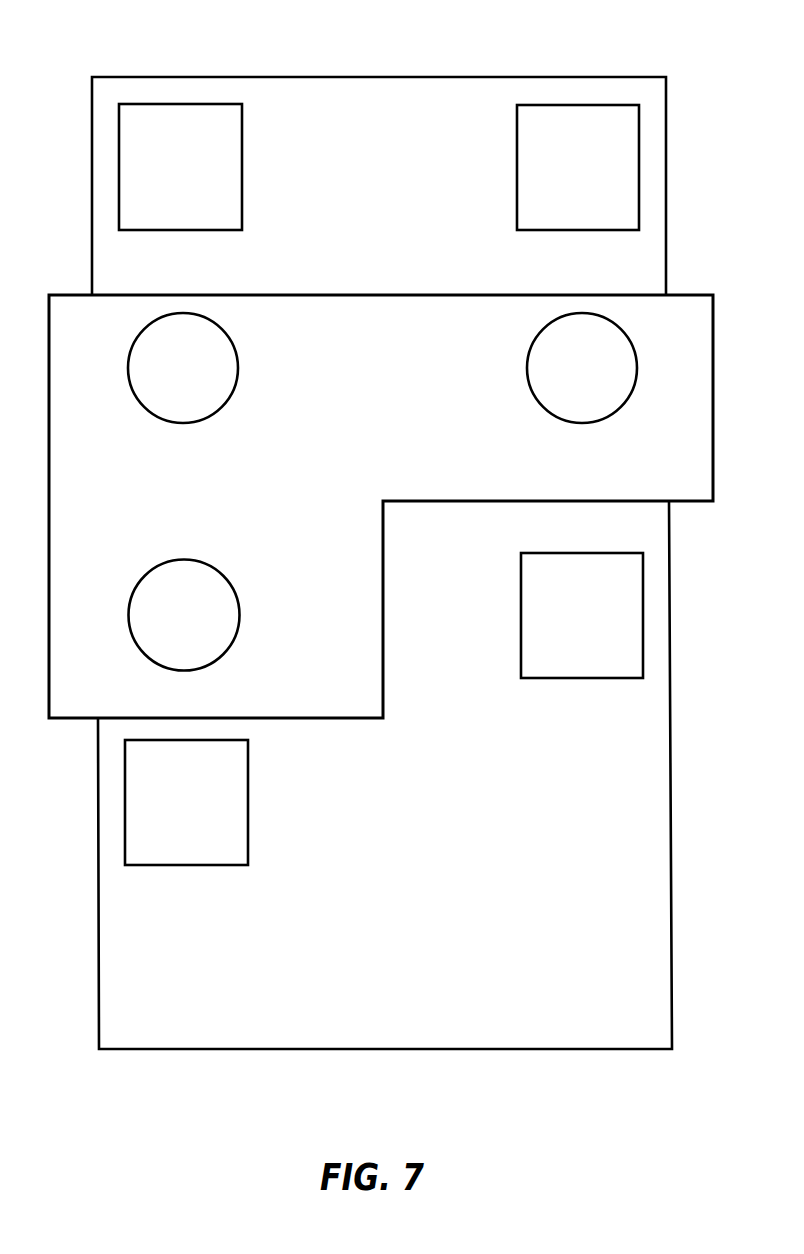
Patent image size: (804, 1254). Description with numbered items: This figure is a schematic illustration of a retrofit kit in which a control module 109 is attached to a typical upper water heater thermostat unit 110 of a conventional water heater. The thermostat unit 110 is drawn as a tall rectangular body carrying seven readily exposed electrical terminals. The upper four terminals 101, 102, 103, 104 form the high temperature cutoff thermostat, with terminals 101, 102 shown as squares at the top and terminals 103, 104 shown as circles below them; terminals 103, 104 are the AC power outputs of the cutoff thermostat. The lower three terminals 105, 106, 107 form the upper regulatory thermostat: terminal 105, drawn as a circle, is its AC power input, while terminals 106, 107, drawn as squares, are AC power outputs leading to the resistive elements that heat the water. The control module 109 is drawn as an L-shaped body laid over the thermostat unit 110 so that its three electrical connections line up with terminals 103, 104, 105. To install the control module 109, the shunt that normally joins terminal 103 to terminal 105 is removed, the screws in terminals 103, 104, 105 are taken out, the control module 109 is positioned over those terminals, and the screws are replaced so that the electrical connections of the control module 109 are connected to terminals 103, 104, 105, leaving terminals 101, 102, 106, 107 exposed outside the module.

The terminal 101 is at (164, 184).
The terminal 102 is at (561, 184).
The terminal 103 is at (161, 386).
The terminal 104 is at (561, 387).
The terminal 105 is at (161, 632).
The terminal 106 is at (564, 633).
The terminal 107 is at (166, 818).
The control module 109 is at (276, 507).
The upper water heater thermostat unit 110 is at (365, 1007).